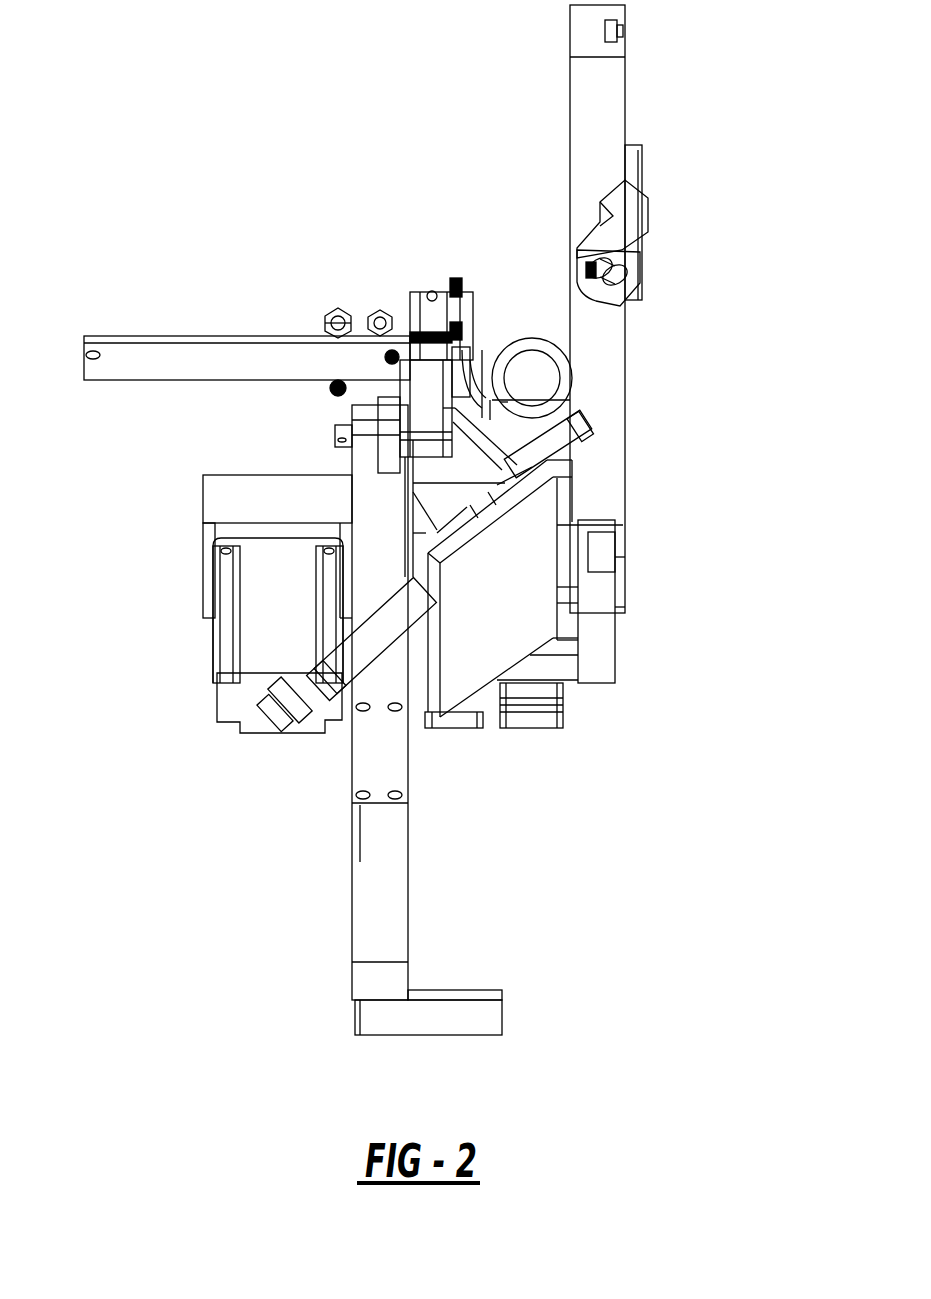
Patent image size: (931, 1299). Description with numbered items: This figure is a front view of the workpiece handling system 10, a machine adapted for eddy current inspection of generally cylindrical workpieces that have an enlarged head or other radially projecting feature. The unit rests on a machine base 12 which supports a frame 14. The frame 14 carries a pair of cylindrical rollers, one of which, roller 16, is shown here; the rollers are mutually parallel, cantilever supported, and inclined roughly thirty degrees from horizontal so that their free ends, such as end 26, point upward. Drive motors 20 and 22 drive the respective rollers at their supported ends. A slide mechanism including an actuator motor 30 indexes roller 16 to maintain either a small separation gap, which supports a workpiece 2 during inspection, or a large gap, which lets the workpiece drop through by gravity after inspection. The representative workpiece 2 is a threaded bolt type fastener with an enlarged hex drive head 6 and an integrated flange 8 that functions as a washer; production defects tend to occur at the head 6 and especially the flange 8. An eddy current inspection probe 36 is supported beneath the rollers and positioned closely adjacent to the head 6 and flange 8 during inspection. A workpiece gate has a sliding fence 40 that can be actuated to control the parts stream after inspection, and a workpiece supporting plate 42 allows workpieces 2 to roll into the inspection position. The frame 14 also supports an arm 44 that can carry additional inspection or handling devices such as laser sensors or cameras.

The workpiece handling system 10 is at (199, 132).
The machine base 12 is at (472, 1036).
The frame 14 is at (613, 660).
The cylindrical roller 16 is at (537, 347).
The drive motor 20 is at (553, 728).
The drive motor 22 is at (445, 728).
The roller end 26 is at (553, 347).
The actuator motor 30 is at (217, 704).
The eddy current inspection probe 36 is at (468, 305).
The sliding fence 40 is at (582, 438).
The workpiece supporting plate 42 is at (145, 337).
The arm 44 is at (625, 100).
The workpiece 2 is at (340, 312).
The enlarged head 6 is at (346, 312).
The flange 8 is at (322, 320).